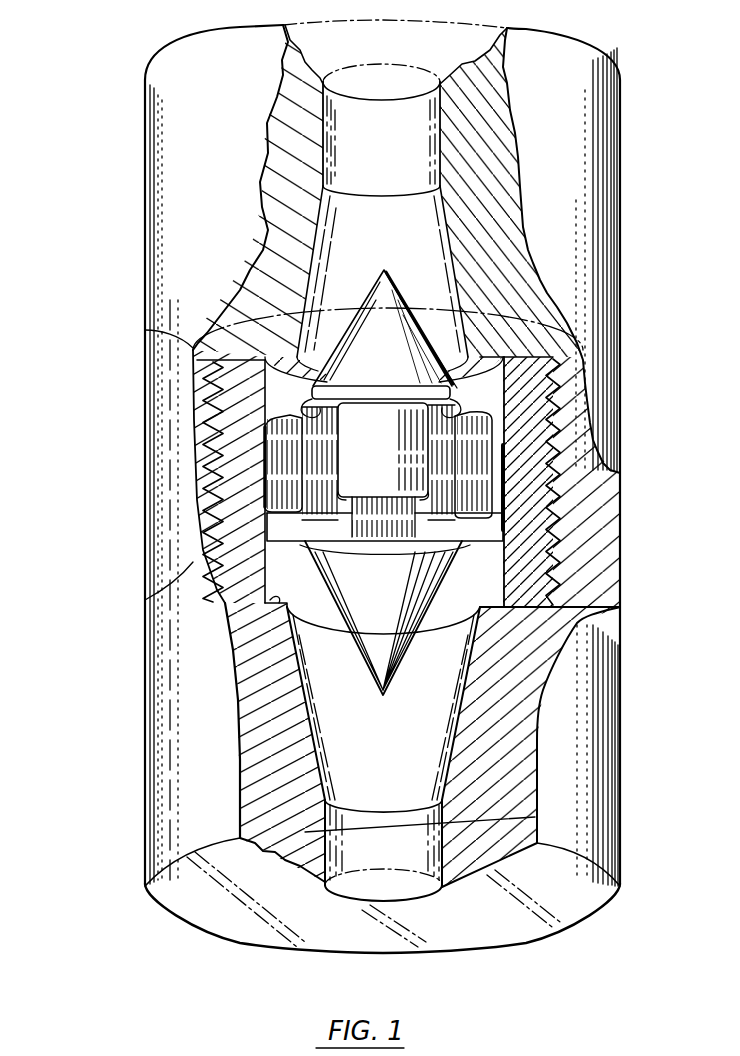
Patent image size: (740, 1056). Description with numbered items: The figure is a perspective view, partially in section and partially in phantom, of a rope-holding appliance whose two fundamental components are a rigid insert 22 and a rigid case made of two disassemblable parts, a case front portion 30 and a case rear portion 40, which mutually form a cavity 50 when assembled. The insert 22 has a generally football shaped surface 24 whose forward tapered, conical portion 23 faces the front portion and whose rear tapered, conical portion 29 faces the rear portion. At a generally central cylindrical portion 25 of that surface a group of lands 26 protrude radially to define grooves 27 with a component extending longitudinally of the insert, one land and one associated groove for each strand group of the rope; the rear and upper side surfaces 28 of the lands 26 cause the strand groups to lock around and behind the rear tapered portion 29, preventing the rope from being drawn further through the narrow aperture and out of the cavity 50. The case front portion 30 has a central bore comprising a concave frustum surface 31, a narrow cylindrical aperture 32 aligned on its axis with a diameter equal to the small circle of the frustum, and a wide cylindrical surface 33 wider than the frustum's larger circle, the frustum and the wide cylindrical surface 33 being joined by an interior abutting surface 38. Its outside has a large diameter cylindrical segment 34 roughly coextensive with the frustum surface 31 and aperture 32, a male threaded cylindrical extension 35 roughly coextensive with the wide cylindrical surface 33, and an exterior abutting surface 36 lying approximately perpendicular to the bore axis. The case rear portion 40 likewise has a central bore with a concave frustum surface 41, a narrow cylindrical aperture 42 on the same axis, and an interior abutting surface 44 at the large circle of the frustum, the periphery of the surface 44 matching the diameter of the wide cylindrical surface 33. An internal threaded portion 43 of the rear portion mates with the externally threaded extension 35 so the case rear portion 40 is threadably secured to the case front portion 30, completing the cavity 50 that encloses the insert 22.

The insert 22 is at (420, 653).
The forward tapered portion 23 is at (352, 597).
The football shaped surface 24 is at (418, 533).
The central cylindrical portion 25 is at (345, 527).
The lands 26 is at (272, 457).
The grooves 27 is at (328, 437).
The rear and upper side surfaces 28 is at (445, 360).
The rear tapered portion 29 is at (373, 302).
The case front portion 30 is at (135, 727).
The concave frustum surface 31 is at (345, 785).
The narrow cylindrical aperture 32 is at (410, 843).
The wide cylindrical surface 33 is at (218, 540).
The large diameter cylindrical segment 34 is at (145, 650).
The male threaded cylindrical extension 35 is at (300, 520).
The exterior abutting surface 36 is at (245, 923).
The interior abutting surface 38 is at (238, 661).
The case rear portion 40 is at (135, 246).
The concave frustum surface 41 is at (415, 212).
The narrow cylindrical aperture 42 is at (357, 129).
The internal threaded portion 43 is at (205, 390).
The interior abutting surface 44 is at (193, 355).
The cavity 50 is at (226, 614).